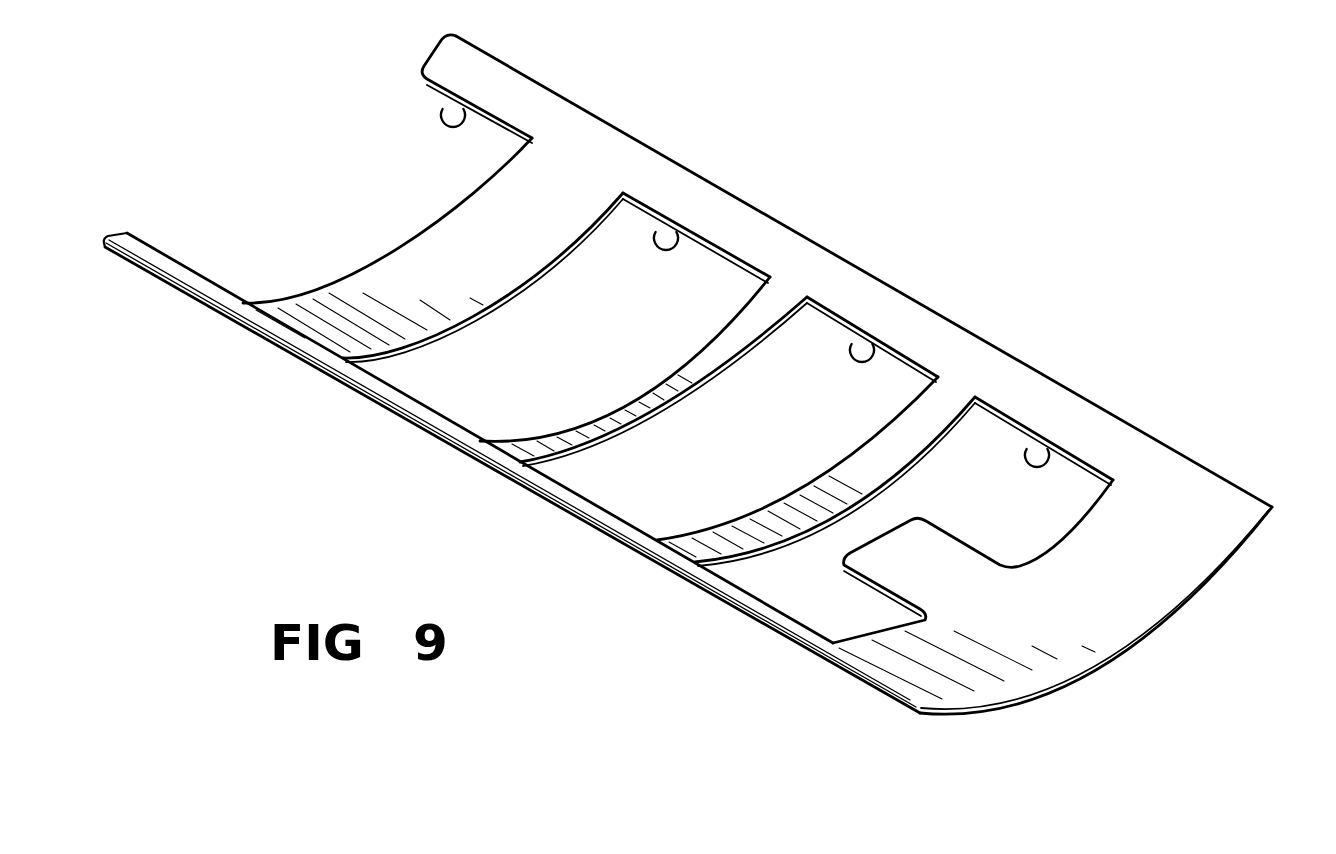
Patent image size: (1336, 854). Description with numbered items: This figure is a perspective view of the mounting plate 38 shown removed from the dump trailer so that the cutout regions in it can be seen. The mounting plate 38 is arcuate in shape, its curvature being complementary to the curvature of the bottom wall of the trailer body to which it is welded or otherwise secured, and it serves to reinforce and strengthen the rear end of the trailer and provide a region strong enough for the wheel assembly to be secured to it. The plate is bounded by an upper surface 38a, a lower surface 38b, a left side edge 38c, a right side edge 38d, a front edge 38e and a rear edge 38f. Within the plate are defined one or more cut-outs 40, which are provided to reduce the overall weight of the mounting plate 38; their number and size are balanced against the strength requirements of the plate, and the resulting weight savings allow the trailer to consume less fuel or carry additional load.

The mounting plate 38 is at (865, 228).
The upper surface 38a is at (1173, 513).
The lower surface 38b is at (1168, 572).
The left side edge 38c is at (583, 525).
The right side edge 38d is at (641, 140).
The front edge 38e is at (410, 242).
The rear edge 38f is at (1125, 656).
The cut-outs 40 is at (465, 110).